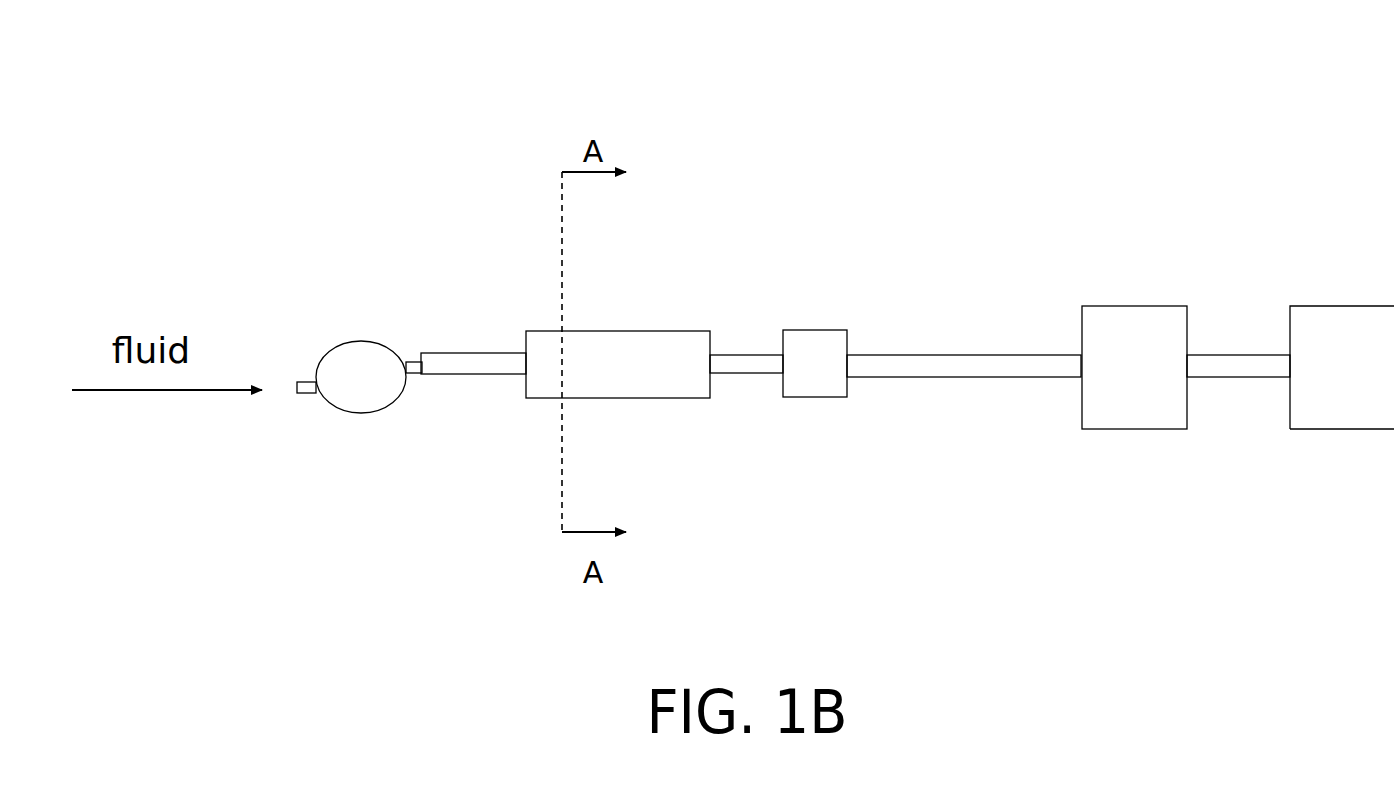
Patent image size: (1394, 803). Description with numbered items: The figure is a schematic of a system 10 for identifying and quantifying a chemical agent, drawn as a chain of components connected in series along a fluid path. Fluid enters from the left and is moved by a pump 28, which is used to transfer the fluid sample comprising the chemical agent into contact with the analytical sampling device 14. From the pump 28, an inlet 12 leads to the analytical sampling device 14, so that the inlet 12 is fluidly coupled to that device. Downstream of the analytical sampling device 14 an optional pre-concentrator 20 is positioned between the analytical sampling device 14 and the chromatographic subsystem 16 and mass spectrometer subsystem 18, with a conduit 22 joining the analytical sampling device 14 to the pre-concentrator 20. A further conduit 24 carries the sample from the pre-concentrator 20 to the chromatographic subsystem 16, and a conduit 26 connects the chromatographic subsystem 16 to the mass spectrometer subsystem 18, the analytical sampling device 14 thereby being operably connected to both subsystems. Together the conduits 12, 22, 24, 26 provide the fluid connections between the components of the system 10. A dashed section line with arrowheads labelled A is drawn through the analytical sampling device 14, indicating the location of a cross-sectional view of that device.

The system 10 is at (412, 133).
The inlet 12 is at (455, 342).
The analytical sampling device 14 is at (618, 364).
The chromatographic subsystem 16 is at (1134, 367).
The mass spectrometer subsystem 18 is at (1342, 367).
The pre-concentrator 20 is at (815, 363).
The conduit 22 is at (740, 347).
The conduit 24 is at (961, 345).
The conduit 26 is at (1230, 345).
The pump 28 is at (359, 377).